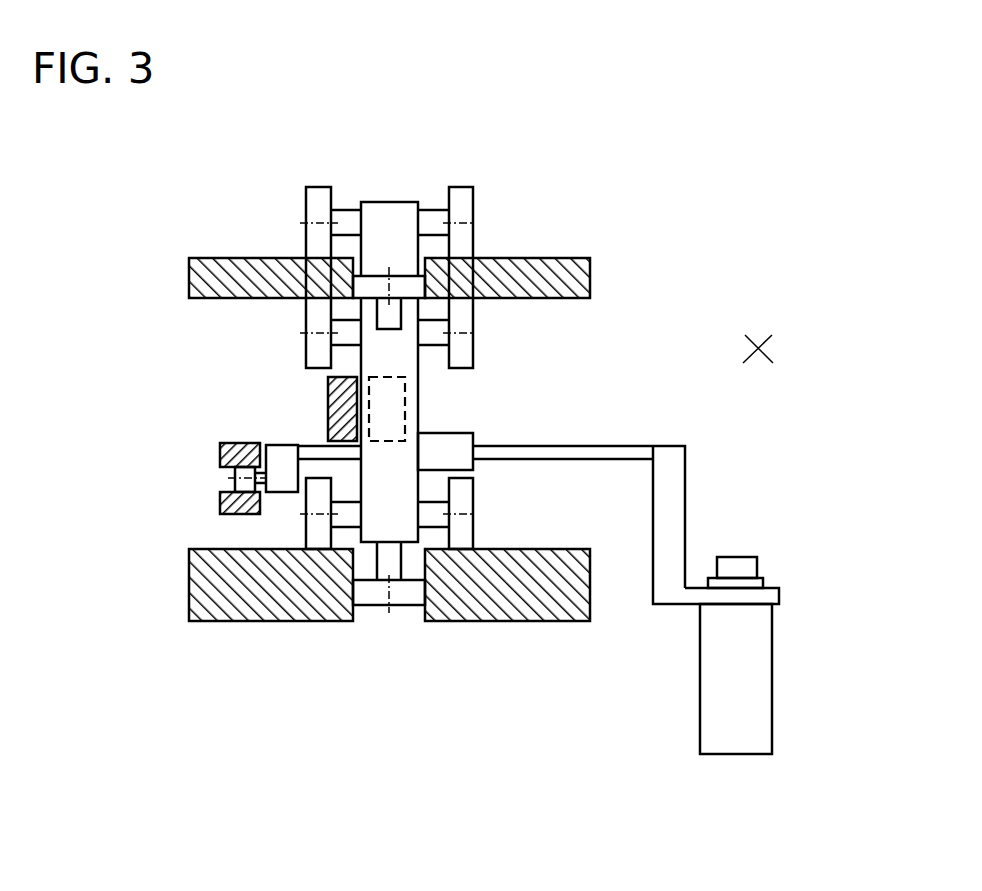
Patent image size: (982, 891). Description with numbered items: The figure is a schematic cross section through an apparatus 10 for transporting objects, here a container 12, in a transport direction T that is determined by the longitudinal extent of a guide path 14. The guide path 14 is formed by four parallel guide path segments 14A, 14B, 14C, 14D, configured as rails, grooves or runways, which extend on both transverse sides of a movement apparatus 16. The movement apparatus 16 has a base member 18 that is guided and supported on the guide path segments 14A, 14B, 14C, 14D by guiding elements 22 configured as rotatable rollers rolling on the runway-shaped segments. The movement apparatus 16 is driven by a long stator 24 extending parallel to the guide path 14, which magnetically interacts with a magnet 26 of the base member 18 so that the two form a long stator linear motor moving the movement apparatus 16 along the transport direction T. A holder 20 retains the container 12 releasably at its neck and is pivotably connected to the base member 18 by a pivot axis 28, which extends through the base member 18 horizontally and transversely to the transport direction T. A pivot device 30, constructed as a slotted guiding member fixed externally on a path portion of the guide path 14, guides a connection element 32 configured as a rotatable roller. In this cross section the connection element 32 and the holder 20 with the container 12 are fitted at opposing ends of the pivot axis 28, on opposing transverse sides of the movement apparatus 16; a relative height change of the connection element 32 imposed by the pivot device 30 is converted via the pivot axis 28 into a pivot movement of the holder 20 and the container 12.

The apparatus 10 is at (410, 115).
The container 12 is at (770, 676).
The guide path 14 is at (140, 225).
The guide path segment 14A is at (188, 265).
The guide path segment 14B is at (188, 590).
The guide path segment 14C is at (592, 277).
The guide path segment 14D is at (550, 622).
The movement apparatus 16 is at (538, 190).
The base member 18 is at (418, 389).
The holder 20 is at (758, 596).
The guiding elements 22 is at (307, 237).
The long stator 24 is at (328, 412).
The magnet 26 is at (405, 403).
The pivot axis 28 is at (587, 452).
The pivot device 30 is at (220, 510).
The connection element 32 is at (233, 485).
The transport direction T is at (753, 337).